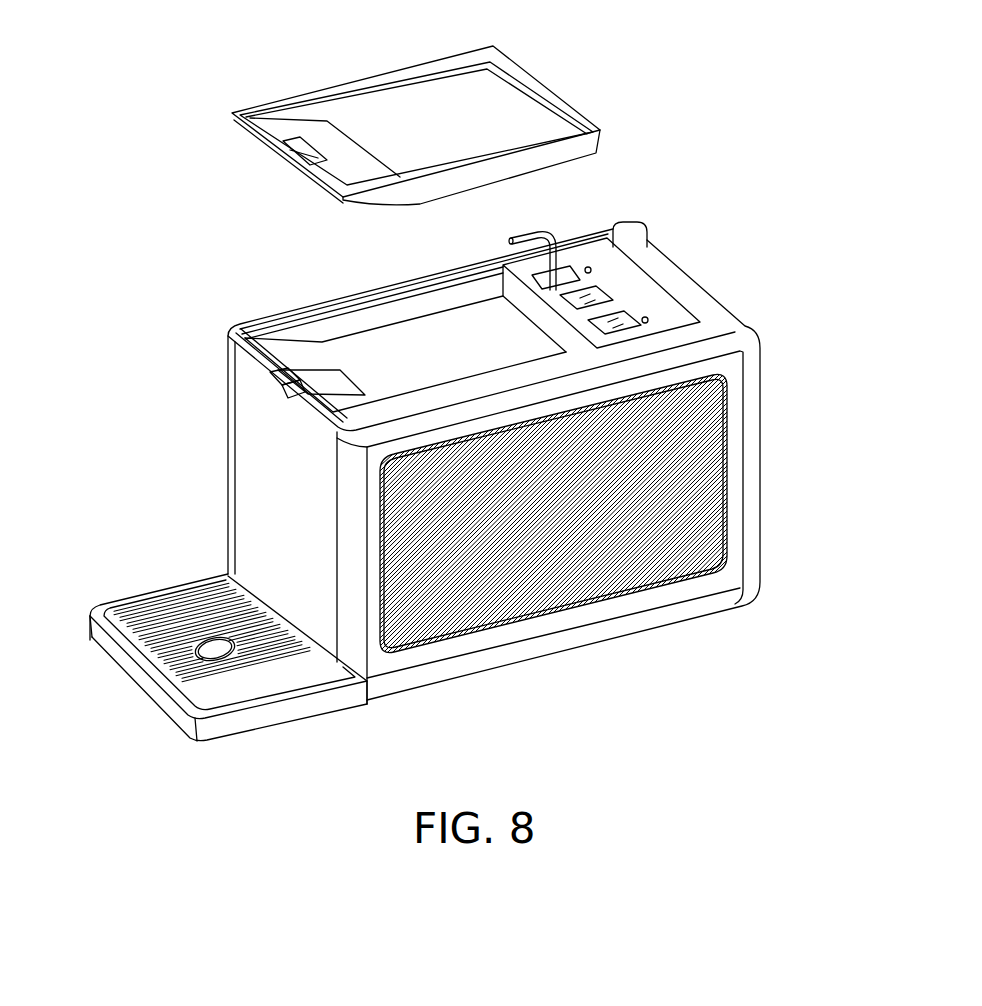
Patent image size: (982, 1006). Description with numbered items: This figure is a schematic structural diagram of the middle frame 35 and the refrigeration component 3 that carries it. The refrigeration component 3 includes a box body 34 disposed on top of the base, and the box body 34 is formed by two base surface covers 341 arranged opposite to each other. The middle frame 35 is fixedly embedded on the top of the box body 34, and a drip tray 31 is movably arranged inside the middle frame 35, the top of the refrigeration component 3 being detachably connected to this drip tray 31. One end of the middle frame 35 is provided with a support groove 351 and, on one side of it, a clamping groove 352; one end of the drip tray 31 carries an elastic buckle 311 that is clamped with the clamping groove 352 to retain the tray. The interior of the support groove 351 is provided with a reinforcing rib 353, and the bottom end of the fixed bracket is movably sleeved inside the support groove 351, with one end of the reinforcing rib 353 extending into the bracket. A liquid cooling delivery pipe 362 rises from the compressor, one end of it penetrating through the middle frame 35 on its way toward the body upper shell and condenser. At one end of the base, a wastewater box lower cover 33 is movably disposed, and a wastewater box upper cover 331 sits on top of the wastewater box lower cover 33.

The refrigeration component 3 is at (463, 486).
The drip tray 31 is at (433, 125).
The elastic buckle 311 is at (283, 157).
The wastewater box lower cover 33 is at (207, 679).
The wastewater box upper cover 331 is at (186, 627).
The box body 34 is at (760, 390).
The base surface cover 341 is at (724, 480).
The middle frame 35 is at (440, 360).
The support groove 351 is at (294, 403).
The clamping groove 352 is at (315, 381).
The reinforcing rib 353 is at (266, 385).
The liquid cooling delivery pipe 362 is at (560, 262).